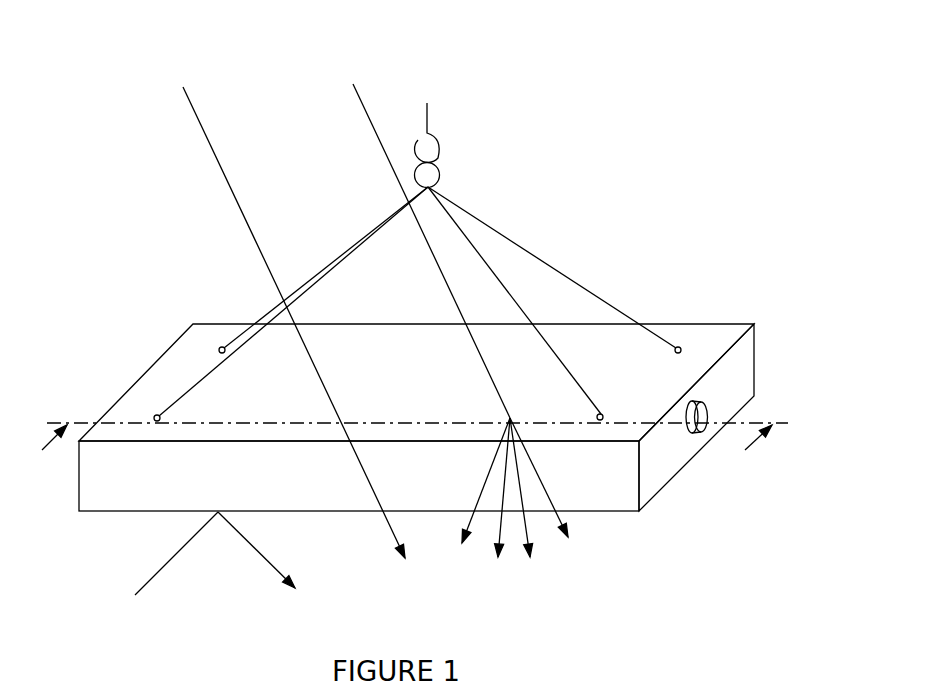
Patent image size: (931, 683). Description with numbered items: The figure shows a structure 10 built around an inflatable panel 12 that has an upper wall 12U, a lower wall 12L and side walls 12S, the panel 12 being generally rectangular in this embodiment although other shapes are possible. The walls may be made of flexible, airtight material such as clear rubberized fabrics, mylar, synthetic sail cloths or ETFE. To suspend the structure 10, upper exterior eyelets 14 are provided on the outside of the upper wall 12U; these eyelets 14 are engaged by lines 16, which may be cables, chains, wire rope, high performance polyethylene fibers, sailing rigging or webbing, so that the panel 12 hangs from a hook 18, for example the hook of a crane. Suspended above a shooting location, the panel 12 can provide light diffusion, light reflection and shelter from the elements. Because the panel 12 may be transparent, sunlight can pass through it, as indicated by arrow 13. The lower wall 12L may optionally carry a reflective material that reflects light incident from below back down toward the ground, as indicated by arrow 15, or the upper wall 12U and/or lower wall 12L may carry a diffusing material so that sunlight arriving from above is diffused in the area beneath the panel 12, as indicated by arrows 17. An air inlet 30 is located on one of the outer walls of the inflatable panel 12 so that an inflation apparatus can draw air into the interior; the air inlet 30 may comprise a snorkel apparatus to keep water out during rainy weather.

The structure 10 is at (737, 175).
The inflatable panel 12 is at (743, 313).
The upper wall 12U is at (672, 337).
The side walls 12S is at (747, 362).
The lower wall 12L is at (140, 530).
The arrow 13 is at (393, 542).
The upper exterior eyelets 14 is at (221, 347).
The arrow 15 is at (258, 553).
The lines 16 is at (370, 230).
The arrows 17 is at (562, 496).
The hook 18 is at (440, 153).
The air inlet 30 is at (708, 417).